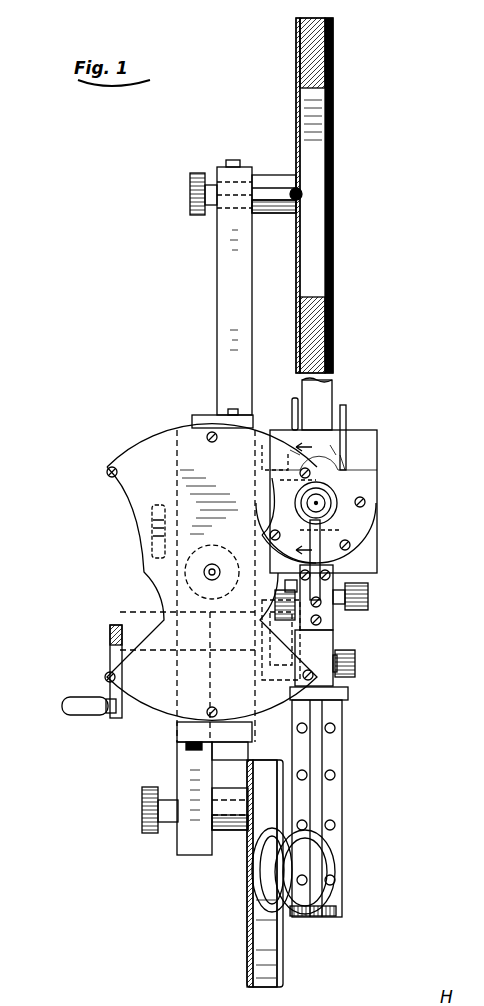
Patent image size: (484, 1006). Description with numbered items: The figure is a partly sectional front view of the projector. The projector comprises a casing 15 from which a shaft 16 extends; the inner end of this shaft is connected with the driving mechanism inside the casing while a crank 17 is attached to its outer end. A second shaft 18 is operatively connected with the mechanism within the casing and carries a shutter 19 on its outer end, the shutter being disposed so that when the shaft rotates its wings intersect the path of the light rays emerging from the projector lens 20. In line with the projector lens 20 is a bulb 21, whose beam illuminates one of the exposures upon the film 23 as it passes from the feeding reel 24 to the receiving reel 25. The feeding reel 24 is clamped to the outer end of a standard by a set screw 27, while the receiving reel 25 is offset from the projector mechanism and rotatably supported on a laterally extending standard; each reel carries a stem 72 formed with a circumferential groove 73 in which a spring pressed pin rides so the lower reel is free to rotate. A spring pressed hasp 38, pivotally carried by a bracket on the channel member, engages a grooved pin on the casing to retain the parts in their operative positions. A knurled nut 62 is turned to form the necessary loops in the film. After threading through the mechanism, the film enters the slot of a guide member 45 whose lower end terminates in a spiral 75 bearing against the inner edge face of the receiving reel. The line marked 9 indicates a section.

The section line indicator 9 is at (311, 497).
The casing 15 is at (185, 732).
The shaft 16 is at (137, 632).
The crank 17 is at (93, 705).
The second shaft 18 is at (210, 572).
The shutter 19 is at (211, 583).
The projector lens 20 is at (336, 492).
The bulb 21 is at (365, 573).
The film 23 is at (313, 158).
The feeding reel 24 is at (328, 274).
The receiving reel 25 is at (246, 905).
The set screw 27 is at (190, 192).
The spring pressed hasp 38 is at (347, 412).
The guide member 45 is at (338, 772).
The knurled nut 62 is at (157, 527).
The stem 72 is at (278, 181).
The circumferential groove 73 is at (178, 830).
The spiral 75 is at (285, 862).